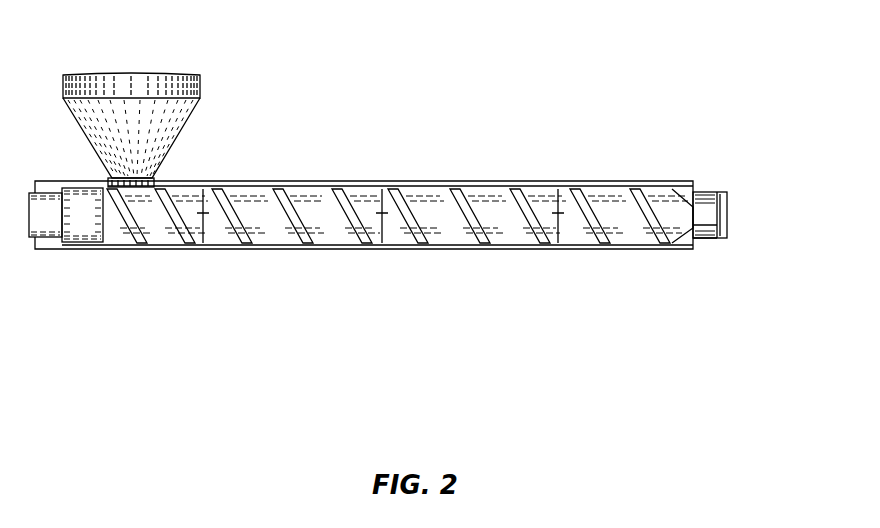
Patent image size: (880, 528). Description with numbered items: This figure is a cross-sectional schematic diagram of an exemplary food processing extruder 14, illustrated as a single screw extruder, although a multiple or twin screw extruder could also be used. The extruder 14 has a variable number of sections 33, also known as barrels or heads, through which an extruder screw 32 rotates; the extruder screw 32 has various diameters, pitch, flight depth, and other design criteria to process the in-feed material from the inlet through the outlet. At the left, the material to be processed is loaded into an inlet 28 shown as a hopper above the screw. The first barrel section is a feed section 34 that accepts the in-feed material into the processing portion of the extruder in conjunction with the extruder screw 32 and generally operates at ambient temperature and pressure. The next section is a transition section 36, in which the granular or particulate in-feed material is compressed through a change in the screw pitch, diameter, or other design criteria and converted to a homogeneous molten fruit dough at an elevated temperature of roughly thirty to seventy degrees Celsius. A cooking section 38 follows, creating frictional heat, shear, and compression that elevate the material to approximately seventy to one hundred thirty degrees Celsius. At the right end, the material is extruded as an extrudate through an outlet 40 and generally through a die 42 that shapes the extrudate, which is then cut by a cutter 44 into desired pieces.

The extruder 14 is at (566, 130).
The inlet 28 is at (132, 73).
The extruder screw 32 is at (108, 240).
The sections 33 is at (652, 181).
The feed section 34 is at (310, 258).
The transition section 36 is at (313, 258).
The cooking section 38 is at (697, 258).
The outlet 40 is at (696, 194).
The die 42 is at (703, 239).
The cutter 44 is at (727, 213).